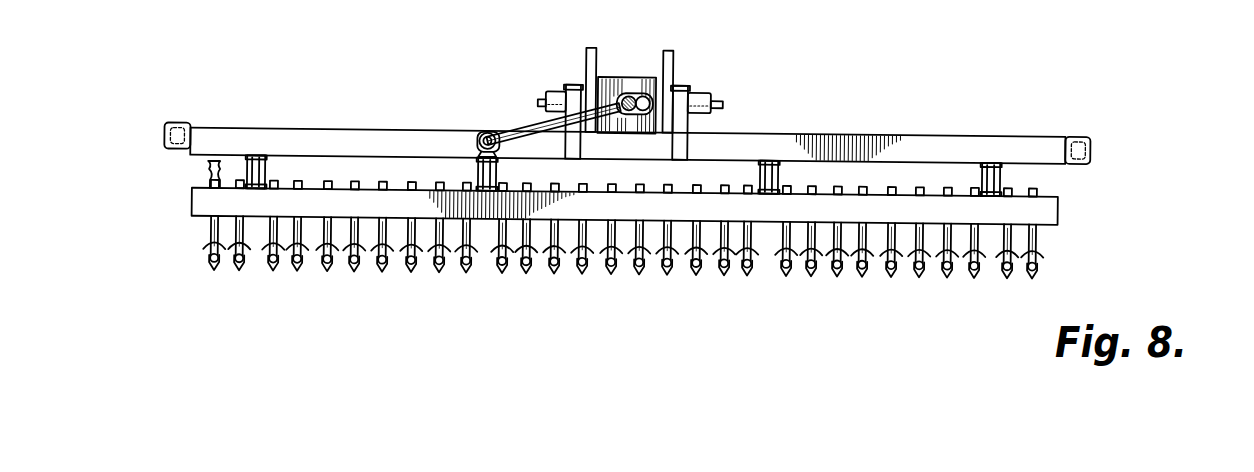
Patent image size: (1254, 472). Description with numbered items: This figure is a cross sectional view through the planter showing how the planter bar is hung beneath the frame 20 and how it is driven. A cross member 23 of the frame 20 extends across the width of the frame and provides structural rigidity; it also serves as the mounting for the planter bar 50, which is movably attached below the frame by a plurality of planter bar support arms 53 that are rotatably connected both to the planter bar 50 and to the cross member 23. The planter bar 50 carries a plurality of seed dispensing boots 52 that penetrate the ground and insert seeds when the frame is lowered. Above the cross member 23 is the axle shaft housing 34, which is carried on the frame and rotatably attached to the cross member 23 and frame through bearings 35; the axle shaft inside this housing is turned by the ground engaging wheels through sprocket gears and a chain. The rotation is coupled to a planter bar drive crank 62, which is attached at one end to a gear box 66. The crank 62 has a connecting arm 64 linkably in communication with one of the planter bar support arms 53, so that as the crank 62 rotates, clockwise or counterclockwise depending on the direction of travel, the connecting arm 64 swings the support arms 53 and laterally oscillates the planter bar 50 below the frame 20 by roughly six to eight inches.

The frame 20 is at (1099, 136).
The cross member 23 is at (377, 131).
The axle shaft housing 34 is at (552, 92).
The bearings 35 is at (572, 84).
The planter bar 50 is at (730, 215).
The seed dispensing boots 52 is at (697, 264).
The planter bar support arms 53 is at (267, 168).
The planter bar drive crank 62 is at (635, 122).
The connecting arm 64 is at (530, 128).
The gear box 66 is at (632, 76).